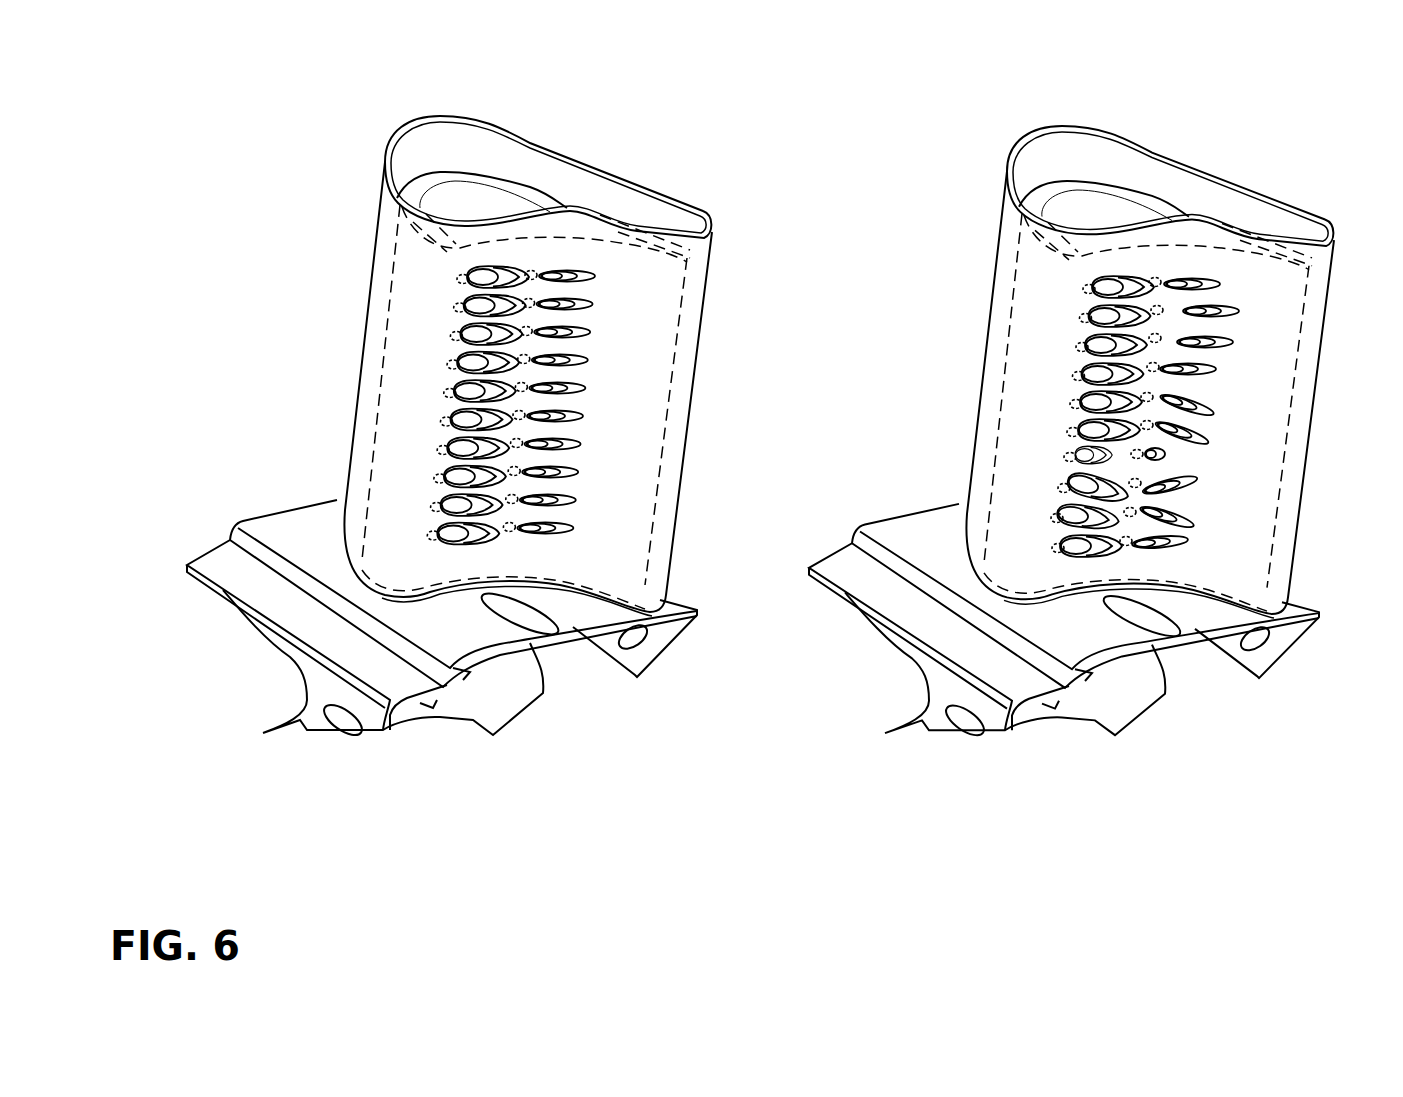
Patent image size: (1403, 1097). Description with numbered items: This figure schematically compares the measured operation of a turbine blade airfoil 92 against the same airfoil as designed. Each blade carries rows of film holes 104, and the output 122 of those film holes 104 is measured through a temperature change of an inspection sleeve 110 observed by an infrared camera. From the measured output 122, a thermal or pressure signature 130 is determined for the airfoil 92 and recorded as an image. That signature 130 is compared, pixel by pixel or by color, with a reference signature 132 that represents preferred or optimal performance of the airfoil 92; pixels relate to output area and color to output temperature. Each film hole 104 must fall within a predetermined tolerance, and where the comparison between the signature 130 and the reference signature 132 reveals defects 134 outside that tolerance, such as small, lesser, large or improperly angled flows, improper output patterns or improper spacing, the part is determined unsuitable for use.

The airfoil 92 is at (452, 197).
The film holes 104 is at (438, 480).
The inspection sleeve 110 is at (468, 148).
The output 122 is at (835, 327).
The signature 130 is at (1125, 327).
The reference signature 132 is at (447, 343).
The defects 134 is at (1167, 303).